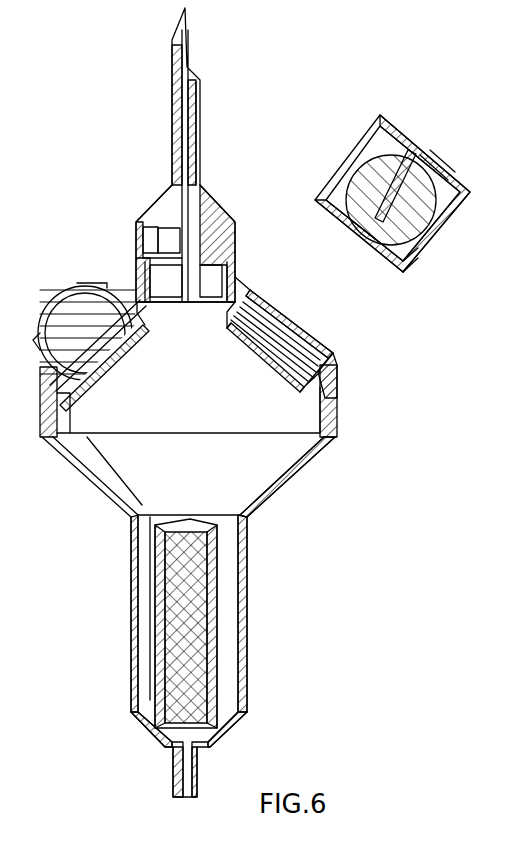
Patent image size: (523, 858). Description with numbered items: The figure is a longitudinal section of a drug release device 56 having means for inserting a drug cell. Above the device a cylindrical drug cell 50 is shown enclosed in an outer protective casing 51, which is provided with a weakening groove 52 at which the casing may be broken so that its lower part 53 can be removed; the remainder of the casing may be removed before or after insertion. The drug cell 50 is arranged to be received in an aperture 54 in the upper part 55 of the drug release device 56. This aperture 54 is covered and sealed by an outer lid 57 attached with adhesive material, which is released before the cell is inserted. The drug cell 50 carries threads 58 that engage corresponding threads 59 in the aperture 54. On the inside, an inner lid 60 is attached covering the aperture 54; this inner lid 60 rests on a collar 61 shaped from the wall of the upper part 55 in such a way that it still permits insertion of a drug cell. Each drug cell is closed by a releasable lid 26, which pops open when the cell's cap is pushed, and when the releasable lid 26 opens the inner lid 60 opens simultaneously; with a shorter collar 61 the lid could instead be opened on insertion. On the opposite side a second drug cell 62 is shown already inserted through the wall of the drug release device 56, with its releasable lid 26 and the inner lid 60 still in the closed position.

The releasable lid 26 is at (95, 375).
The cylindrical drug cell 50 is at (403, 135).
The outer protective casing 51 is at (437, 167).
The weakening groove 52 is at (352, 157).
The lower part of protective casing 53 is at (327, 182).
The aperture 54 is at (313, 338).
The upper part 55 is at (238, 294).
The drug release device 56 is at (313, 298).
The outer lid 57 is at (290, 326).
The threads 58 is at (417, 252).
The corresponding threads 59 is at (335, 365).
The inner lid 60 is at (127, 345).
The collar 61 is at (232, 313).
The second drug cell 62 is at (82, 284).